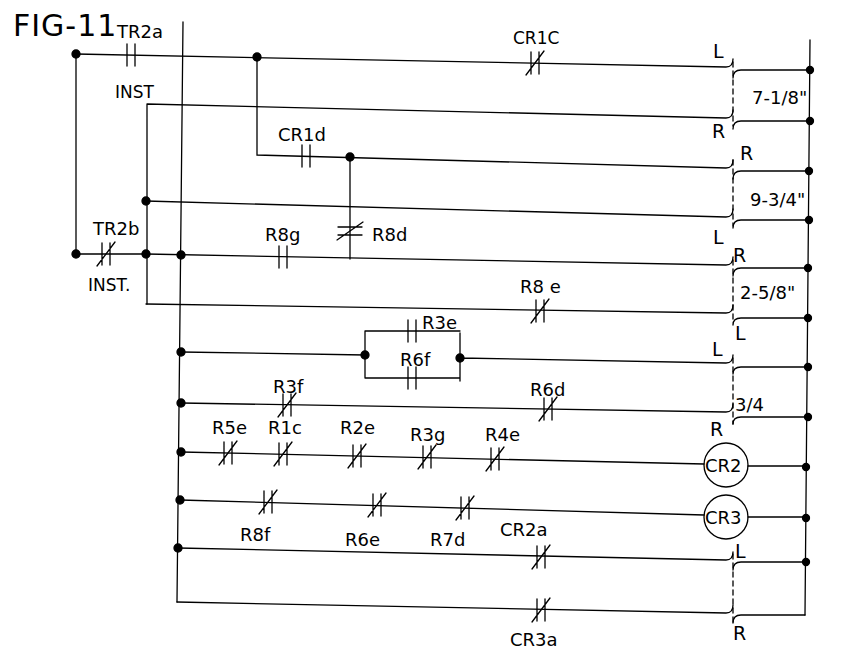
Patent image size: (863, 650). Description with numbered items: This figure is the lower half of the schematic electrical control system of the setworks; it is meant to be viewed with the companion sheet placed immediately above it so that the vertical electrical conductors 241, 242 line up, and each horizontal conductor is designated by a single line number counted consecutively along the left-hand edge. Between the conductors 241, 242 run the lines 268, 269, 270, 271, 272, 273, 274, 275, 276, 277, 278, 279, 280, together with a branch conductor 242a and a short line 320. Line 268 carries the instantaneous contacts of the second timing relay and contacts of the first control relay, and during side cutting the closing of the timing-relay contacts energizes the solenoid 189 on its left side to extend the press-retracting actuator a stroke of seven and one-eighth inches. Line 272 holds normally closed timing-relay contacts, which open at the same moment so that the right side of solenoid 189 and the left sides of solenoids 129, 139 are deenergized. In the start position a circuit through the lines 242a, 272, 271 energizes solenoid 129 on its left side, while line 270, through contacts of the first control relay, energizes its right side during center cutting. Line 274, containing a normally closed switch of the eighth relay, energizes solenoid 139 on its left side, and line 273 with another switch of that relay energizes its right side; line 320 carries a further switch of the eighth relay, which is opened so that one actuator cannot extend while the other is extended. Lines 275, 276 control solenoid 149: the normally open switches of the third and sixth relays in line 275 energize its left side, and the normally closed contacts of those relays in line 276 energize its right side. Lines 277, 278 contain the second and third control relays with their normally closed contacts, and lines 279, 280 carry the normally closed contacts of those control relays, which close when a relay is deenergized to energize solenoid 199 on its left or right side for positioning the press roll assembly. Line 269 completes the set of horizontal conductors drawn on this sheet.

The electrical conductor 241 is at (809, 49).
The electrical conductor 242 is at (183, 36).
The line 242a is at (77, 143).
The line 268 is at (422, 60).
The line 269 is at (455, 199).
The line 270 is at (514, 118).
The line 271 is at (455, 209).
The line 272 is at (89, 254).
The line 273 is at (477, 260).
The line 274 is at (459, 309).
The line 275 is at (471, 354).
The line 276 is at (471, 407).
The line 277 is at (470, 463).
The line 278 is at (470, 513).
The line 279 is at (470, 553).
The line 280 is at (467, 606).
The line 320 is at (351, 177).
The relay 189 is at (726, 95).
The solenoid 129 is at (726, 192).
The solenoid 139 is at (728, 292).
The solenoid 149 is at (724, 392).
The solenoid 199 is at (726, 590).